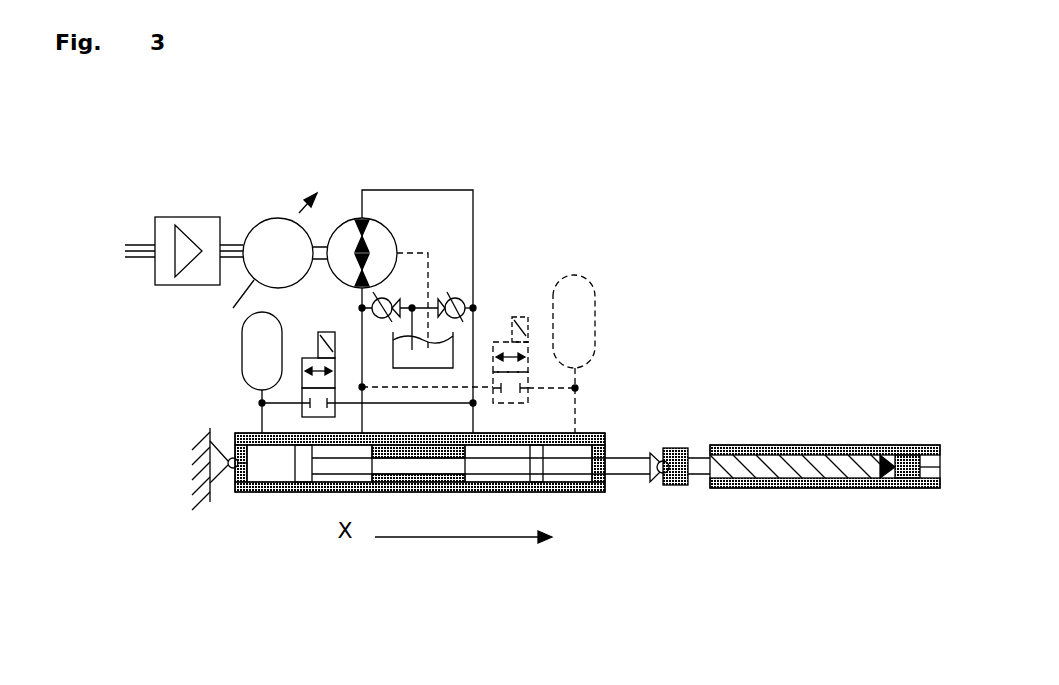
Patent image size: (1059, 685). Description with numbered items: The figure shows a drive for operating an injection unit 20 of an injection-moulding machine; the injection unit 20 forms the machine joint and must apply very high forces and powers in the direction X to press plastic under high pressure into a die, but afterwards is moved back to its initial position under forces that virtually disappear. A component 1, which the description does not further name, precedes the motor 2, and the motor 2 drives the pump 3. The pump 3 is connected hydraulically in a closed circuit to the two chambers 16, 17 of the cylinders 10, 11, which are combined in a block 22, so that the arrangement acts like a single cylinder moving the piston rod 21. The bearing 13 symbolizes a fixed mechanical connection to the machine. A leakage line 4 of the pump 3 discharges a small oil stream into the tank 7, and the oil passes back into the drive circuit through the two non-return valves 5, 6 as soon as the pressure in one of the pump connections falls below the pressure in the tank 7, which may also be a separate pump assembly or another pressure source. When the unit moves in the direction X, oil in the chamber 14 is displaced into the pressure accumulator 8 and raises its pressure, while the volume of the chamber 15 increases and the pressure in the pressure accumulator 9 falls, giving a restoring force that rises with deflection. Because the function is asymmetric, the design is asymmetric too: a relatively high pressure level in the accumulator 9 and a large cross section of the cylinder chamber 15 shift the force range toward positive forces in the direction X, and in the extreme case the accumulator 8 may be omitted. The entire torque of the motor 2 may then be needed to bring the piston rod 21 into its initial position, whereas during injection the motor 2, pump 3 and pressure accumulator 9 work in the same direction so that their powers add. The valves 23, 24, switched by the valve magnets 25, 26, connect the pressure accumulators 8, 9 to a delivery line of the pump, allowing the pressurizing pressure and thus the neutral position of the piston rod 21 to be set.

The amplifier 1 is at (165, 232).
The motor 2 is at (273, 230).
The pump 3 is at (345, 230).
The leakage line 4 is at (398, 250).
The non-return valve 5 is at (383, 313).
The non-return valve 6 is at (455, 310).
The tank 7 is at (448, 352).
The pressure accumulator 8 is at (577, 283).
The pressure accumulator 9 is at (252, 378).
The cylinder 10 is at (595, 440).
The cylinder 11 is at (235, 442).
The bearing 13 is at (228, 463).
The chamber 14 is at (553, 478).
The chamber 15 is at (275, 468).
The chamber 16 is at (483, 477).
The chamber 17 is at (352, 475).
The injection unit 20 is at (780, 463).
The piston rod 21 is at (330, 470).
The block 22 is at (443, 482).
The valve 23 is at (527, 368).
The valve 24 is at (300, 385).
The valve magnet 25 is at (525, 320).
The valve magnet 26 is at (318, 342).